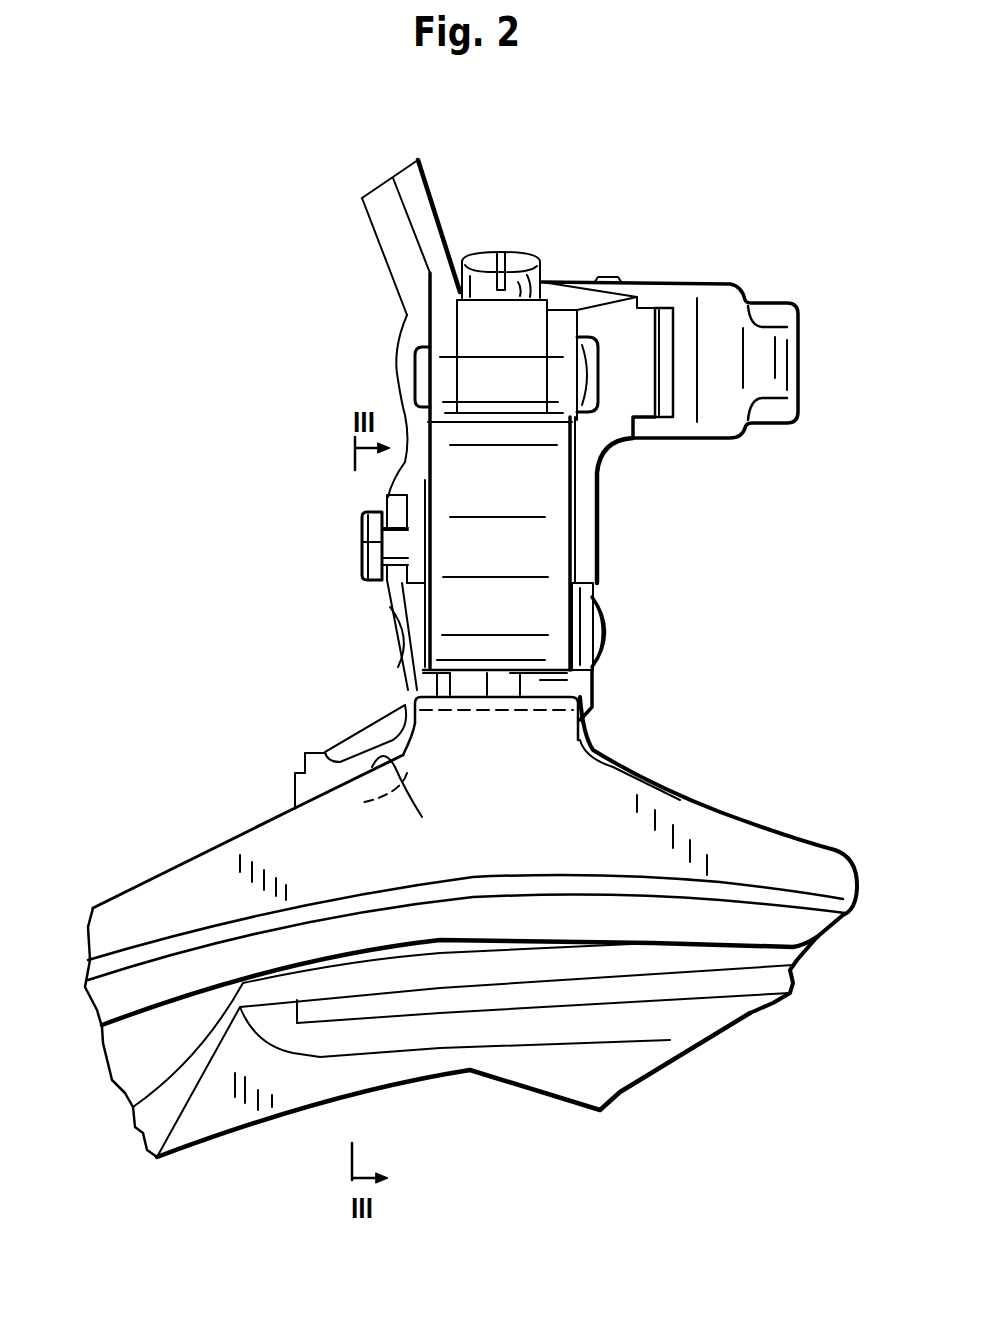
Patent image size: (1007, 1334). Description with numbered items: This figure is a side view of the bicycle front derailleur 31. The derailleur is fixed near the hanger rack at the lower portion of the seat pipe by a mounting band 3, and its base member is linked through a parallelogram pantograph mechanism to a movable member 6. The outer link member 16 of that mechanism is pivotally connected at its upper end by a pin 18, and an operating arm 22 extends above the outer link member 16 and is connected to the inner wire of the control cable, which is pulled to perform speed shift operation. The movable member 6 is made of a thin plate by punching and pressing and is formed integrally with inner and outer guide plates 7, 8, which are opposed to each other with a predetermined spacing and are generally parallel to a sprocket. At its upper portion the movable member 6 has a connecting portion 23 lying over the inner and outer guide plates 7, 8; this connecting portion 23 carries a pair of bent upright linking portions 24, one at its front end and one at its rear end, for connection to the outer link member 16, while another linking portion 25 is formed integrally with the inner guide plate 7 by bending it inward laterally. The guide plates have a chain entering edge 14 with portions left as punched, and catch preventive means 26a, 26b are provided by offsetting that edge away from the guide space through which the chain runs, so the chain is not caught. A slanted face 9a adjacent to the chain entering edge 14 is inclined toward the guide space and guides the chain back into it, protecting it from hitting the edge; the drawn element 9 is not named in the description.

The mounting band 3 is at (763, 300).
The movable member 6 is at (612, 738).
The inner guide plate 7 is at (527, 1093).
The outer guide plate 8 is at (700, 840).
The base member 9 is at (335, 775).
The slanted face 9a is at (395, 725).
The chain entering edge 14 is at (327, 737).
The outer link member 16 is at (557, 512).
The pin 18 is at (613, 637).
The operating arm 22 is at (443, 217).
The connecting portion 23 is at (483, 697).
The upright linking portions 24 is at (417, 623).
The linking portion 25 is at (294, 792).
The catch preventive means 26a is at (327, 740).
The catch preventive means 26b is at (330, 815).
The bicycle front derailleur 31 is at (250, 497).